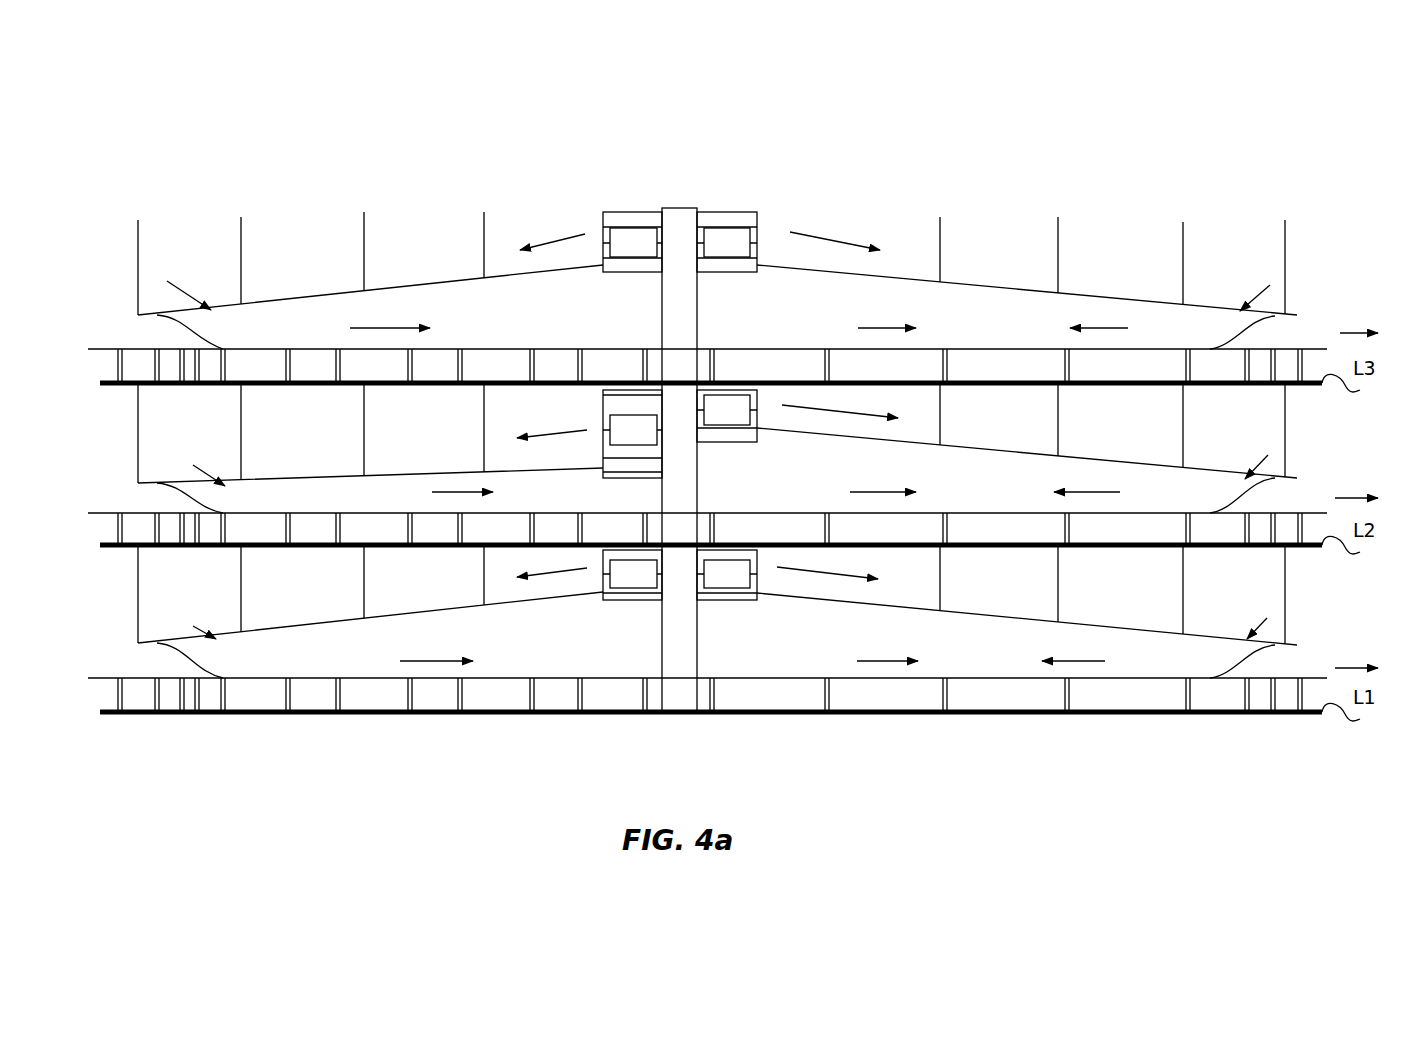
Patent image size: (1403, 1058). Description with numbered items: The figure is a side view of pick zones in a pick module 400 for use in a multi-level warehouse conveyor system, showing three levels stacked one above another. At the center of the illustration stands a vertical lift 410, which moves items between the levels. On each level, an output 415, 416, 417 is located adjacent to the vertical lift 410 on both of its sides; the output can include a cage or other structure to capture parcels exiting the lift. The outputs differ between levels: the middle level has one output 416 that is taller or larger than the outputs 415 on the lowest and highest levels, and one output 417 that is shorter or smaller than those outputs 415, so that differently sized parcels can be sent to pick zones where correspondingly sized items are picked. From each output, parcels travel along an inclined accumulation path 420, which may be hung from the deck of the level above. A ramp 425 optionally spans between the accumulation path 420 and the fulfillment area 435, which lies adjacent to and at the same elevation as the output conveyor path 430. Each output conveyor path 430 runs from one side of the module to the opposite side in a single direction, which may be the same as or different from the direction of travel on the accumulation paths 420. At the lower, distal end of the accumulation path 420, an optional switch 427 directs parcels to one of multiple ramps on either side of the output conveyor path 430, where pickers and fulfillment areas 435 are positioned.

The pick module 400 is at (845, 118).
The vertical lift 410 is at (675, 208).
The output 415 is at (680, 406).
The output 416 is at (632, 434).
The output 417 is at (727, 416).
The accumulation path 420 is at (415, 285).
The ramp 425 is at (193, 321).
The switch 427 is at (1297, 315).
The output conveyor path 430 is at (1318, 349).
The fulfillment area 435 is at (768, 349).